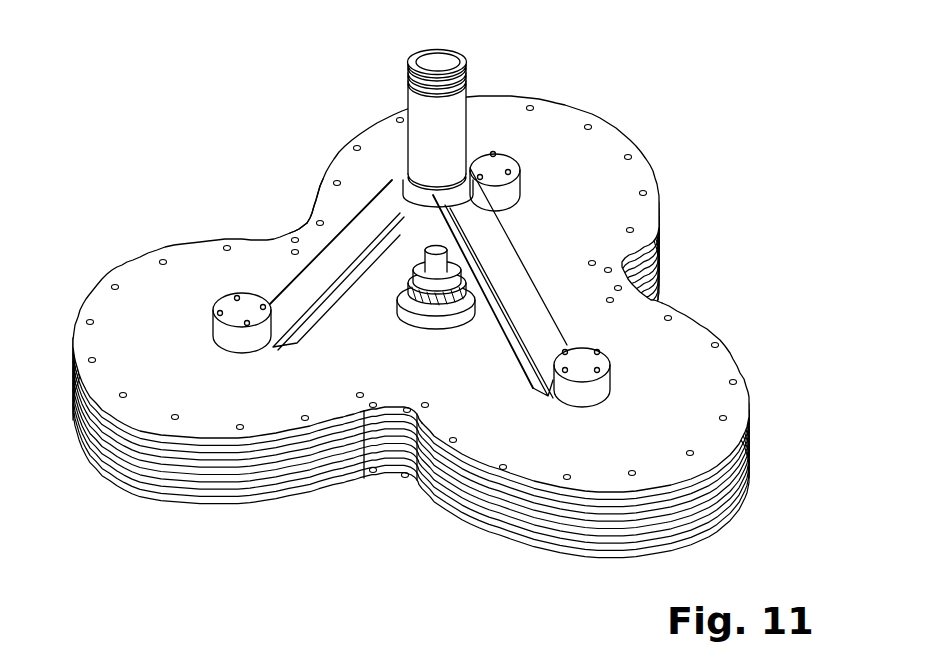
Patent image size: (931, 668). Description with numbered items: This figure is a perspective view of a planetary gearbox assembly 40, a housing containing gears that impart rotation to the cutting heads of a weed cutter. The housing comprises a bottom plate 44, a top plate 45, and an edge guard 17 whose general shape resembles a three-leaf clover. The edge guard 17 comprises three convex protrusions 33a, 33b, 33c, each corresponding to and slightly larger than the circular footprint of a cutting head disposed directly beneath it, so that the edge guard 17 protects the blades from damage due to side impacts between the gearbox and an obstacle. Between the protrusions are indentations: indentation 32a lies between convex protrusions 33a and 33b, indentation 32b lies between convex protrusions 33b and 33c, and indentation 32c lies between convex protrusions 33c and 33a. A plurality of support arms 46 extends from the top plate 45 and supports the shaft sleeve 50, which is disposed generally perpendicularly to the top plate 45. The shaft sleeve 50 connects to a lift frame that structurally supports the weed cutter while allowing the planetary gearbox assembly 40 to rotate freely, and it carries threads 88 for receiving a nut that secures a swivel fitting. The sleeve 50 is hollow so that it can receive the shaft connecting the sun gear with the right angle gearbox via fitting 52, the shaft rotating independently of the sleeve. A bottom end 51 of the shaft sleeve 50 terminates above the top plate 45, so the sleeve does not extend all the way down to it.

The planetary gearbox assembly 40 is at (632, 93).
The bottom plate 44 is at (153, 487).
The edge guard 17 is at (266, 483).
The convex protrusion 33a is at (540, 98).
The convex protrusion 33b is at (90, 293).
The convex protrusion 33c is at (748, 400).
The indentation 32a is at (306, 222).
The indentation 32b is at (388, 450).
The indentation 32c is at (657, 253).
The support arms 46 is at (497, 200).
The top plate 45 is at (170, 333).
The shaft sleeve 50 is at (427, 52).
The threads 88 is at (467, 82).
The bottom end 51 is at (430, 232).
The fitting 52 is at (403, 303).